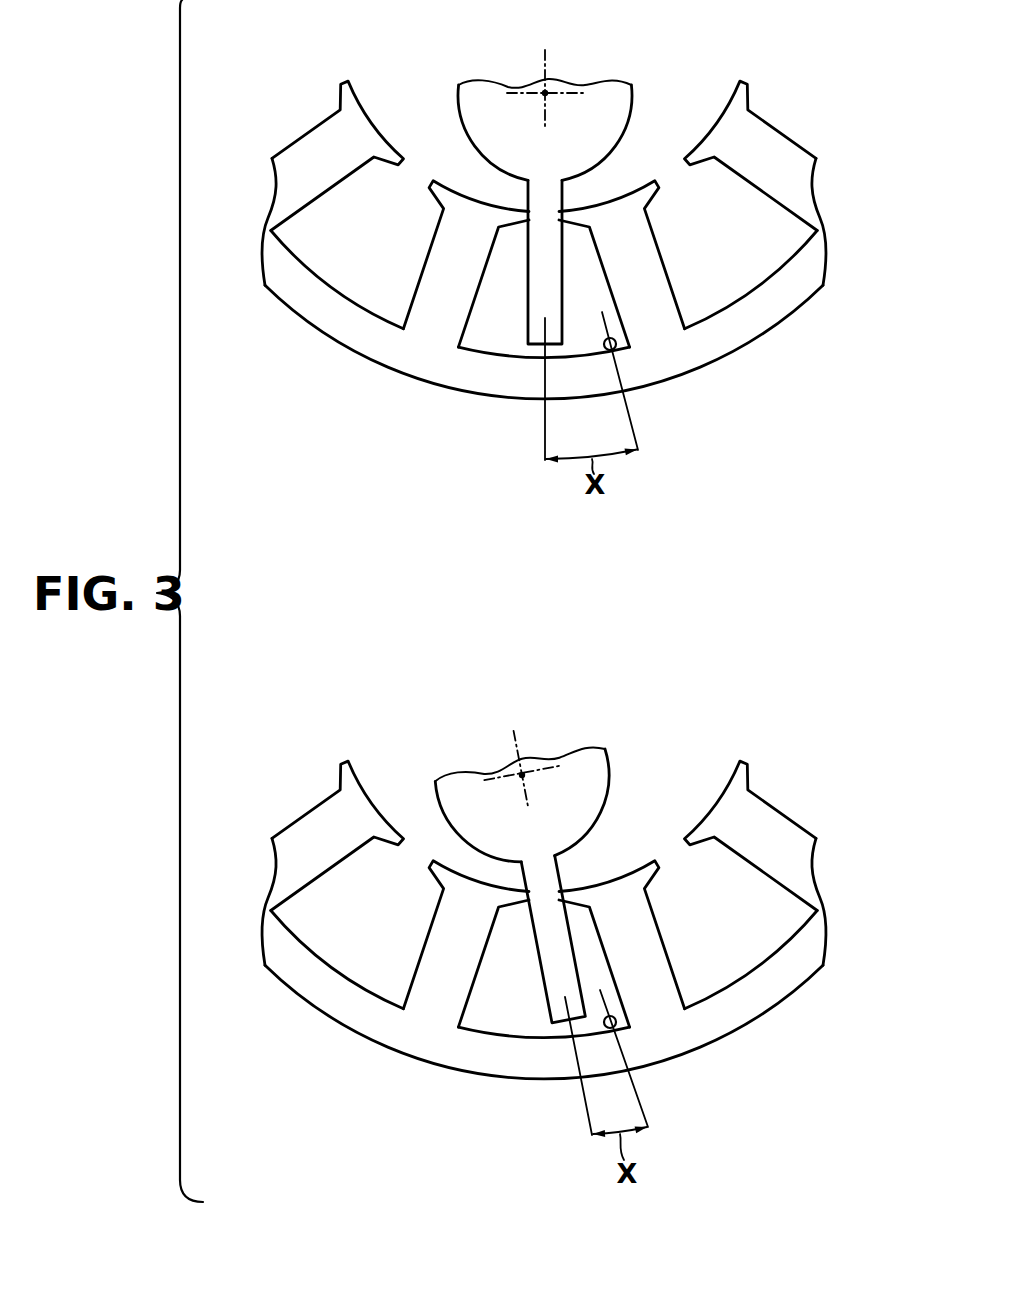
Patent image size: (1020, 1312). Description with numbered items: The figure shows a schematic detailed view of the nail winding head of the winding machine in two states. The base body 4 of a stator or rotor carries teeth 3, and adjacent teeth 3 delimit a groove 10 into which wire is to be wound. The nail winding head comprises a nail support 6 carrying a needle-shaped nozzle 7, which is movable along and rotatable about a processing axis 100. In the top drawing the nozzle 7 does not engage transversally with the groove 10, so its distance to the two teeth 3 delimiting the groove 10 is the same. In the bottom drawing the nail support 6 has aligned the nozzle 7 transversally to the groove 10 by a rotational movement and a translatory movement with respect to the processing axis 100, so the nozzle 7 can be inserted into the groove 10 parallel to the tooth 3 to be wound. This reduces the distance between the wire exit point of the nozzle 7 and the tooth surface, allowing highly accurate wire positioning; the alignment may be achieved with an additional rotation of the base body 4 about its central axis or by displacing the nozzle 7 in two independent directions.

The teeth 3 is at (440, 303).
The base body 4 is at (300, 84).
The nail support 6 is at (498, 123).
The nozzle 7 is at (547, 292).
The groove 10 is at (345, 270).
The processing axis 100 is at (548, 92).